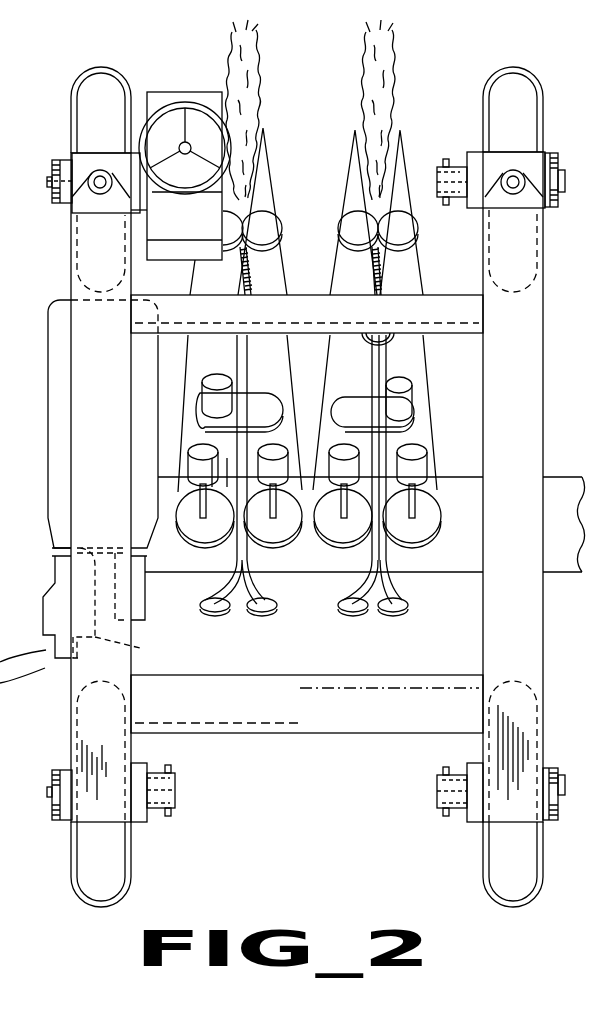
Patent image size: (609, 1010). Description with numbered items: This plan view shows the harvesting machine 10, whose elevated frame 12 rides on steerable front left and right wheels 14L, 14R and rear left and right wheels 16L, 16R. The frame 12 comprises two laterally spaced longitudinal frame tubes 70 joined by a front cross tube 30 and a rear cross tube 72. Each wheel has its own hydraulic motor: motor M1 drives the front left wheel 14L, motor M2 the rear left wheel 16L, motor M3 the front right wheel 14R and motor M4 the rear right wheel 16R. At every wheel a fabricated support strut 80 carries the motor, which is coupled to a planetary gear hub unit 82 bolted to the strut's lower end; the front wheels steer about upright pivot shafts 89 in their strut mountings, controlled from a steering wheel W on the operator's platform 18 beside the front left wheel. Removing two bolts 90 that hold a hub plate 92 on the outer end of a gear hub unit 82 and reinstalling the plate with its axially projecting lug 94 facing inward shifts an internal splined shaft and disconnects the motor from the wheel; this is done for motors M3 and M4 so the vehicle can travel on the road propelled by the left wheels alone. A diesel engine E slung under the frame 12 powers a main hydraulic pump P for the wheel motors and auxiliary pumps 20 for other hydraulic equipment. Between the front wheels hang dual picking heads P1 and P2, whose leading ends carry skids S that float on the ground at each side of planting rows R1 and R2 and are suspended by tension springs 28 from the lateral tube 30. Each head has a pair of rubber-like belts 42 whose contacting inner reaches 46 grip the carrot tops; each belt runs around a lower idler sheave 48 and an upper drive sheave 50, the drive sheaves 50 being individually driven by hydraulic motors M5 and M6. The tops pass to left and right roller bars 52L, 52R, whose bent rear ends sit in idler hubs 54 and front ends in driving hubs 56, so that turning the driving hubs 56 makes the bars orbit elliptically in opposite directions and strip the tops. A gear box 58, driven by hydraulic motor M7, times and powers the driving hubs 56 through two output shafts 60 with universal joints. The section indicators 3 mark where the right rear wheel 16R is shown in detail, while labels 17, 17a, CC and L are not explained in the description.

The harvesting machine 10 is at (54, 101).
The elevated frame 12 is at (550, 290).
The front left wheel 14L is at (72, 120).
The front right wheel 14R is at (543, 78).
The rear left wheel 16L is at (127, 843).
The rear right wheel 16R is at (487, 855).
The member 17 is at (6, 546).
The member portion 17a is at (13, 571).
The operator's platform 18 is at (172, 95).
The auxiliary pumps 20 is at (147, 620).
The tension spring 28 is at (366, 290).
The front cross tube 30 is at (176, 299).
The rubber-like belts 42 is at (330, 263).
The inner belt reaches 46 is at (378, 326).
The lower idler sheave 48 is at (342, 230).
The upper drive sheave 50 is at (401, 539).
The left hand roller bars 52L is at (353, 591).
The right hand roller bars 52R is at (396, 591).
The idler hub 54 is at (392, 633).
The driving hub 56 is at (416, 492).
The gear box 58 is at (355, 397).
The output shafts 60 is at (358, 443).
The longitudinal frame tubes 70 is at (112, 488).
The rear cross tube 72 is at (295, 712).
The wheel support strut 80 is at (147, 765).
The gear hub unit 82 is at (52, 160).
The upright pivot shafts 89 is at (100, 194).
The bolts 90 is at (8, 650).
The hub plate 92 is at (574, 198).
The lug 94 is at (567, 180).
The center line CC is at (320, 566).
The diesel engine E is at (48, 305).
The rail L is at (565, 478).
The hydraulic wheel motor M1 is at (153, 196).
The hydraulic wheel motor M2 is at (175, 788).
The hydraulic wheel motor M3 is at (410, 231).
The hydraulic wheel motor M4 is at (437, 785).
The hydraulic motor M5 is at (341, 443).
The hydraulic motor M6 is at (428, 453).
The hydraulic motor M7 is at (407, 385).
The main hydraulic pump P is at (112, 603).
The picking head P1 is at (270, 130).
The picking head P2 is at (340, 159).
The planting row R1 is at (222, 40).
The planting row R2 is at (405, 51).
The skids S is at (358, 143).
The steering wheel W is at (202, 106).
The section line 3 is at (608, 792).